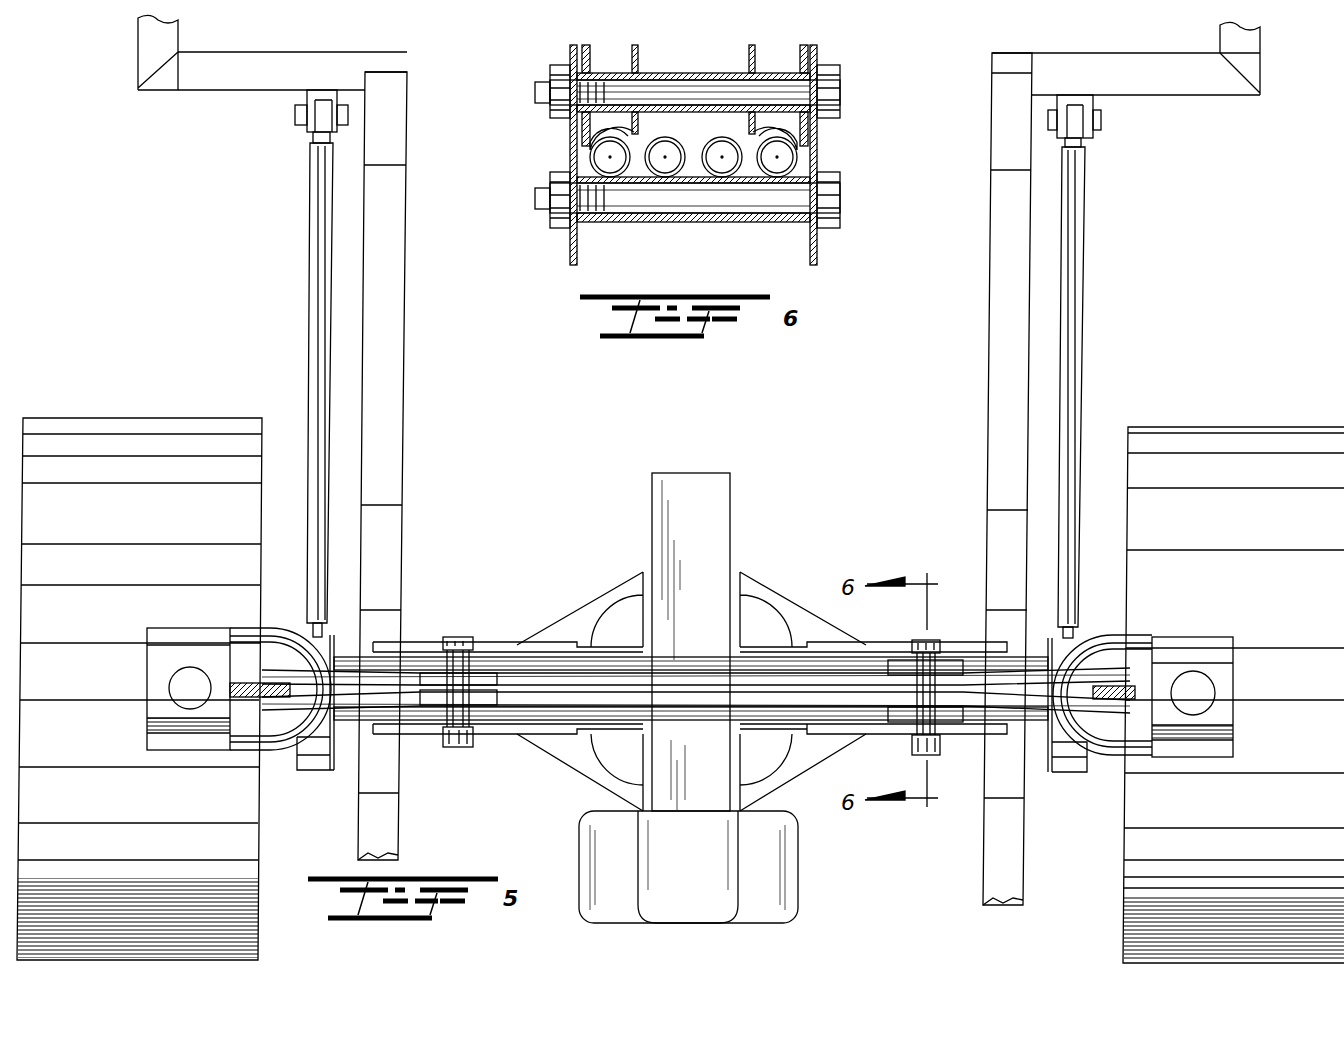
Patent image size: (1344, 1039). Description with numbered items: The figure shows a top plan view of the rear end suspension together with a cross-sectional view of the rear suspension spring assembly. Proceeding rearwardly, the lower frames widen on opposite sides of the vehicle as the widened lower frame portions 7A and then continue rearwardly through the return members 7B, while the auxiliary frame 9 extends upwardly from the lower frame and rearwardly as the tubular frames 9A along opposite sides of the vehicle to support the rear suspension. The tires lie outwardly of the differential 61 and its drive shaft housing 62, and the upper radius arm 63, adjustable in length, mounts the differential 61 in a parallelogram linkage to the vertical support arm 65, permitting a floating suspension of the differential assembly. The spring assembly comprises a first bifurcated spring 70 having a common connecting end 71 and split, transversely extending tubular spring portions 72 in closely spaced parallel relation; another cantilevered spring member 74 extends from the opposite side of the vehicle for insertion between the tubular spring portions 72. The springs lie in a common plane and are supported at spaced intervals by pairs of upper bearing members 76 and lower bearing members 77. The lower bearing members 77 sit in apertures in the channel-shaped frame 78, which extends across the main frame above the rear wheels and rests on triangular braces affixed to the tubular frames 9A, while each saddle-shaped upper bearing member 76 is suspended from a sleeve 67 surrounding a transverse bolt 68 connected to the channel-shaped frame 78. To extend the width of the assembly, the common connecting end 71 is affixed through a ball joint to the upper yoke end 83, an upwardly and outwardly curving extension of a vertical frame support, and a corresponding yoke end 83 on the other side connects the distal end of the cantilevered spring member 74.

In FIG. 5, the widened lower frame portion 7A is at (138, 45).
In FIG. 5, the return member 7B is at (200, 90).
In FIG. 5, the auxiliary frame 9 is at (410, 288).
In FIG. 5, the rearwardly extending tubular frame 9A is at (400, 820).
In FIG. 5, the differential 61 is at (798, 857).
In FIG. 5, the drive shaft housing 62 is at (652, 515).
In FIG. 5, the upper radius arm 63 is at (312, 332).
In FIG. 5, the vertical support arm 65 is at (305, 130).
In FIG. 5, the sleeve 67 is at (440, 712).
In FIG. 6, the sleeve 67 is at (677, 72).
In FIG. 6, the transverse bolt 68 is at (727, 88).
In FIG. 5, the first bifurcated spring 70 is at (567, 668).
In FIG. 5, the common connecting end 71 is at (1120, 678).
In FIG. 5, the tubular spring portion 72 is at (503, 665).
In FIG. 6, the tubular spring portion 72 is at (590, 160).
In FIG. 5, the cantilevered spring member 74 is at (272, 668).
In FIG. 6, the cantilevered spring member 74 is at (670, 178).
In FIG. 5, the upper bearing member 76 is at (423, 673).
In FIG. 6, the upper bearing member 76 is at (585, 137).
In FIG. 6, the lower bearing member 77 is at (610, 223).
In FIG. 5, the channel-shaped frame 78 is at (795, 734).
In FIG. 6, the channel-shaped frame 78 is at (568, 250).
In FIG. 5, the upper yoke end 83 is at (147, 688).